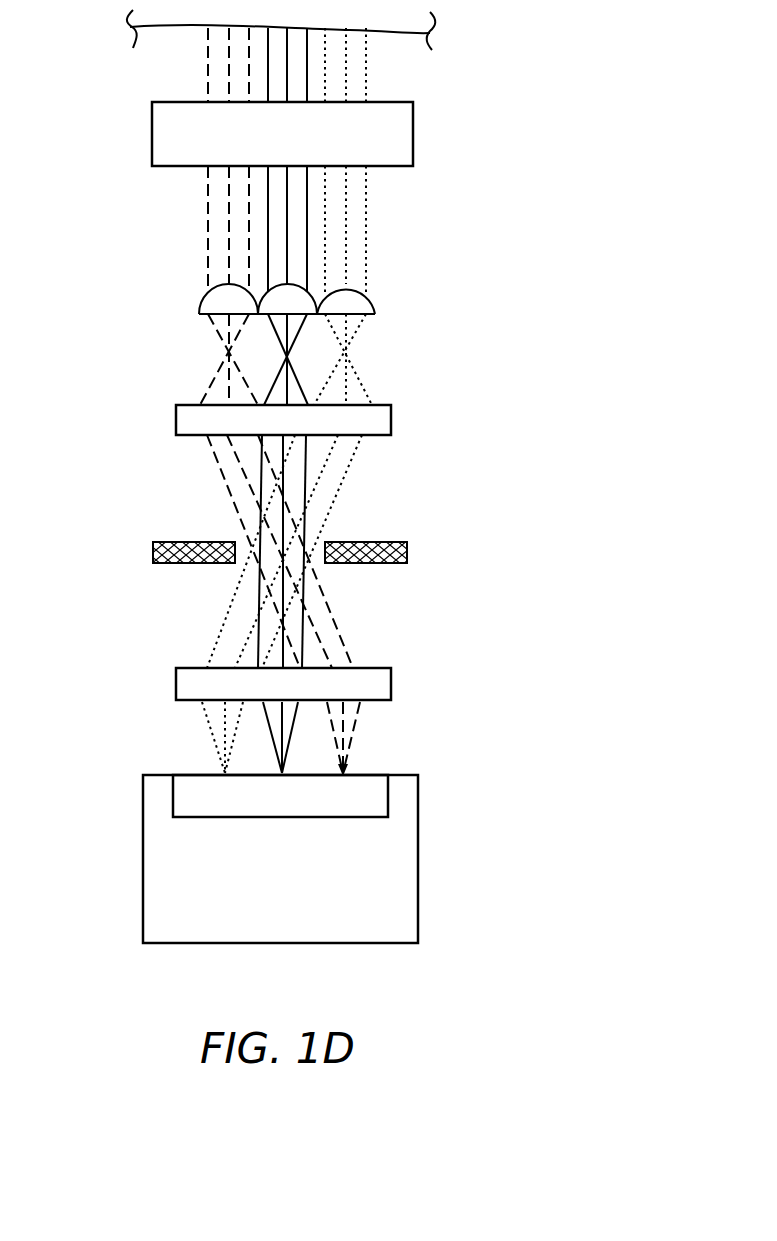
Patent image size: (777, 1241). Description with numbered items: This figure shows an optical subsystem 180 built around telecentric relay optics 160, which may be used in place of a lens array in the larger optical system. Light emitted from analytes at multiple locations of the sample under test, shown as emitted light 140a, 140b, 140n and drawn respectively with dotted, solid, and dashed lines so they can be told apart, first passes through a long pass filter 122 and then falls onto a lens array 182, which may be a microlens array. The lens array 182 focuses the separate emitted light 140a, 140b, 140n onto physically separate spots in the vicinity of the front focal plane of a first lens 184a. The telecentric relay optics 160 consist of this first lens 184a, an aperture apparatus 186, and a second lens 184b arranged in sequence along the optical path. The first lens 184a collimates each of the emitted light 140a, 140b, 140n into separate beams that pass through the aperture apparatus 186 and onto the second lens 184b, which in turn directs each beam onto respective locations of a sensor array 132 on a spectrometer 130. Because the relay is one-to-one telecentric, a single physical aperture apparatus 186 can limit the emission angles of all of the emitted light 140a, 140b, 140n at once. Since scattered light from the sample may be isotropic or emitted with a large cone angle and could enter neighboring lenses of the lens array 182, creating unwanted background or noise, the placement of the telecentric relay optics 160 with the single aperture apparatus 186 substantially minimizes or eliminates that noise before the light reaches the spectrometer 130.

The long pass filter 122 is at (268, 156).
The emitted light 140n is at (227, 229).
The emitted light 140a is at (366, 198).
The emitted light 140b is at (307, 242).
The lens array 182 is at (199, 302).
The optical subsystem 180 is at (357, 320).
The first lens 184a is at (392, 414).
The aperture apparatus 186 is at (407, 552).
The telecentric relay optics 160 is at (356, 552).
The second lens 184b is at (233, 668).
The sensor array 132 is at (388, 805).
The spectrometer 130 is at (310, 859).